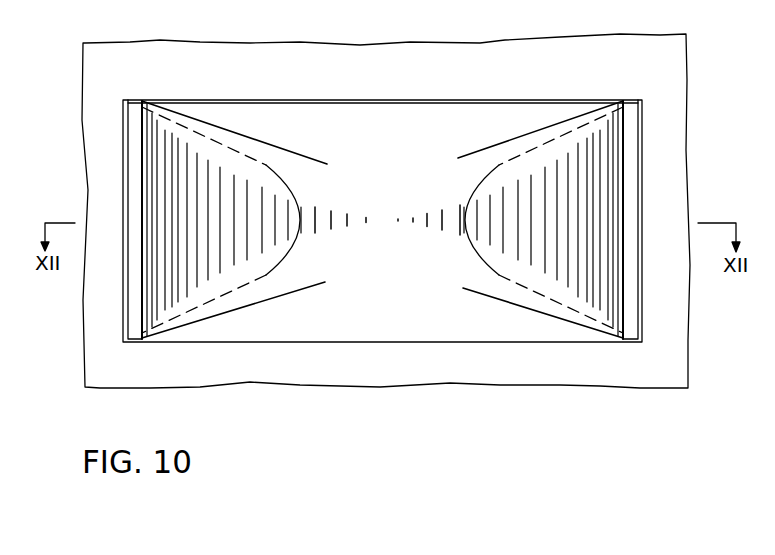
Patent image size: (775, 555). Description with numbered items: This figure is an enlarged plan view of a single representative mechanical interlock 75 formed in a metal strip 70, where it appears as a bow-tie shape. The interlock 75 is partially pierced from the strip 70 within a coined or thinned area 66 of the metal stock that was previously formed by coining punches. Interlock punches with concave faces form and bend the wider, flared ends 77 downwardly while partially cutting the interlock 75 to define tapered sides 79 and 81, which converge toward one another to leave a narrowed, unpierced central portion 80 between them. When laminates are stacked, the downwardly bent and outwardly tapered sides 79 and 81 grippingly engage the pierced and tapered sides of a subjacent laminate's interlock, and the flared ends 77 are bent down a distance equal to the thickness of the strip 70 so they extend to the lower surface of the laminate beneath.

The coined or thinned area 66 is at (370, 118).
The strip 70 is at (515, 32).
The mechanical interlock 75 is at (607, 138).
The flared ends 77 is at (140, 168).
The tapered side 79 is at (535, 134).
The narrowed, unpierced central portion 80 is at (365, 258).
The tapered side 81 is at (252, 140).